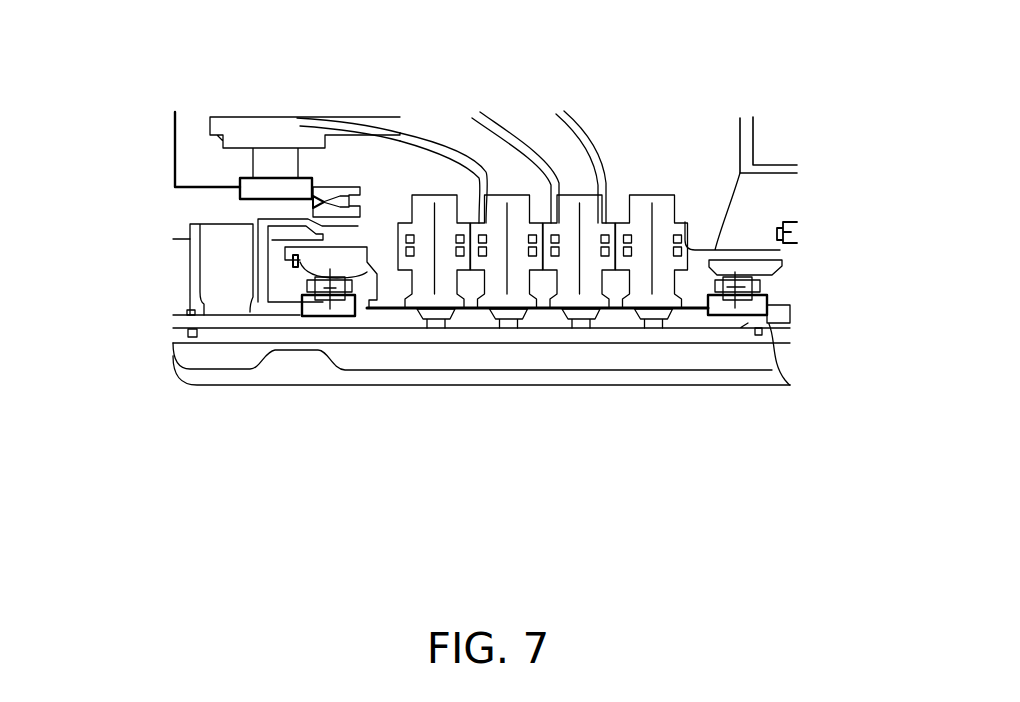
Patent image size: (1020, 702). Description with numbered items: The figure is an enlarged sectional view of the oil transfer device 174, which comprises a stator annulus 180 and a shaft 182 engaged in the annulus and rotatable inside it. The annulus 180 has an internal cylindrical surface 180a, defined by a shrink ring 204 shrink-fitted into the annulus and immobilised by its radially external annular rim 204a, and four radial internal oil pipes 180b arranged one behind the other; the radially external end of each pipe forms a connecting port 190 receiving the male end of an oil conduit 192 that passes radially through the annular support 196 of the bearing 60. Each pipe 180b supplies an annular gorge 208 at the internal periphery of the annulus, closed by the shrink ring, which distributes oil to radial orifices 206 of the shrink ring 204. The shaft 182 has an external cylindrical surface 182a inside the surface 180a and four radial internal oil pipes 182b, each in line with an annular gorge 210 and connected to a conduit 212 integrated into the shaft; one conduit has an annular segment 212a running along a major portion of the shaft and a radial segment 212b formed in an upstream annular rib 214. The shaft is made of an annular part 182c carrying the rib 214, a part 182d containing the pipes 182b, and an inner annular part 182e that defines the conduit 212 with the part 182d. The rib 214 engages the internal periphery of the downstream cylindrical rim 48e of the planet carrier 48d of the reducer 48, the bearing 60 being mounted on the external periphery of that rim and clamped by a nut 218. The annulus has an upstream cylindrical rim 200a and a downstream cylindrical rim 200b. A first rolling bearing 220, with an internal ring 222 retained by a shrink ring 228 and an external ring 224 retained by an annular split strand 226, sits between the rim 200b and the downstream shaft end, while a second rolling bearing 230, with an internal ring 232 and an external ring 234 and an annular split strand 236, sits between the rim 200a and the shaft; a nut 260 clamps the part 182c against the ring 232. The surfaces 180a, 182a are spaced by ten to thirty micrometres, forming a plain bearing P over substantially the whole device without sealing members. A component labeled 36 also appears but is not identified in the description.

The housing 36 is at (637, 375).
The reducer 48 is at (165, 165).
The planet carrier 48d is at (180, 208).
The downstream cylindrical rim 48e is at (207, 207).
The bearing 60 is at (234, 167).
The oil transfer device 174 is at (399, 336).
The stator annulus 180 is at (732, 244).
The internal cylindrical surface 180a is at (755, 165).
The internal oil pipes 180b is at (468, 262).
The shaft 182 is at (785, 341).
The external cylindrical surface 182a is at (551, 340).
The internal oil pipes 182b is at (473, 345).
The annular part 182c is at (185, 253).
The part of the shaft 182d is at (368, 345).
The annular part 182e is at (443, 350).
The connecting port 190 is at (405, 245).
The oil conduit 192 is at (436, 200).
The annular support 196 is at (262, 125).
The upstream cylindrical rim 200a is at (293, 335).
The downstream cylindrical rim 200b is at (797, 232).
The shrink ring 204 is at (355, 372).
The radially external annular rim 204a is at (335, 393).
The radial orifices 206 is at (430, 215).
The annular gorge 208 is at (460, 255).
The annular gorge 210 is at (413, 356).
The conduit 212 is at (253, 300).
The annular segment 212a is at (284, 290).
The radial segment 212b is at (190, 297).
The upstream annular rib 214 is at (193, 267).
The nut 218 is at (330, 190).
The first rolling bearing 220 is at (775, 278).
The internal ring 222 is at (768, 307).
The external ring 224 is at (752, 250).
The annular split strand 226 is at (762, 285).
The shrink ring 228 is at (787, 372).
The second rolling bearing 230 is at (189, 333).
The internal ring 232 is at (302, 305).
The external ring 234 is at (313, 267).
The annular split strand 236 is at (292, 266).
The nut 260 is at (188, 312).
The plain bearing P is at (669, 194).